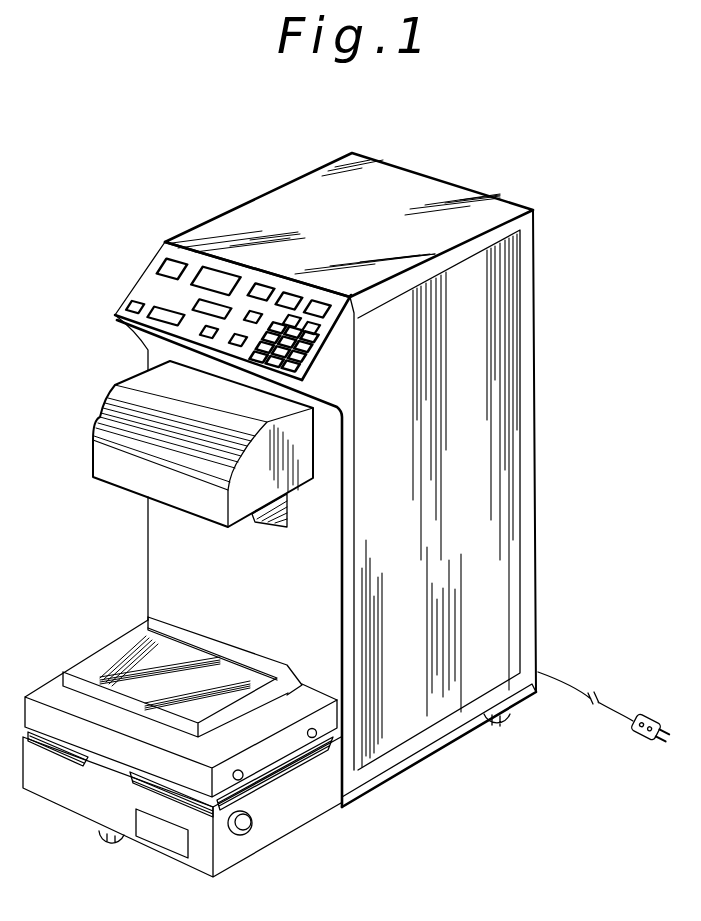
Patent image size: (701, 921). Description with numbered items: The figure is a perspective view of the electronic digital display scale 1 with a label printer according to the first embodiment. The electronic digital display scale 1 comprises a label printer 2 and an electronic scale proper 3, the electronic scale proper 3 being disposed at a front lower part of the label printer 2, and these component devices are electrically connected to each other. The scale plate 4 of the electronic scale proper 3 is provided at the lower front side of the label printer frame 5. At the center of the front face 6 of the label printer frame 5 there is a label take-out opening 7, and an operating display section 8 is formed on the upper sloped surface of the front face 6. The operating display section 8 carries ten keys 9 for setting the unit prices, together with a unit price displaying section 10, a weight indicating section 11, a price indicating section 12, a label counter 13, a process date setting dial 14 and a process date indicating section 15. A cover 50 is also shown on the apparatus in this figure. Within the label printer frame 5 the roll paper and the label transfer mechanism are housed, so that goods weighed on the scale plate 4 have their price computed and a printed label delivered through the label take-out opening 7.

The electronic digital display scale 1 is at (104, 310).
The label printer 2 is at (510, 457).
The electronic scale proper 3 is at (320, 800).
The scale plate 4 is at (105, 662).
The label printer frame 5 is at (517, 597).
The front face 6 is at (172, 568).
The label take-out opening 7 is at (287, 510).
The operating display section 8 is at (152, 275).
The ten keys 9 is at (305, 347).
The unit price displaying section 10 is at (293, 300).
The weight indicating section 11 is at (265, 287).
The price indicating section 12 is at (330, 303).
The label counter 13 is at (167, 268).
The process date setting dial 14 is at (200, 303).
The process date indicating section 15 is at (213, 277).
The cover 50 is at (100, 430).